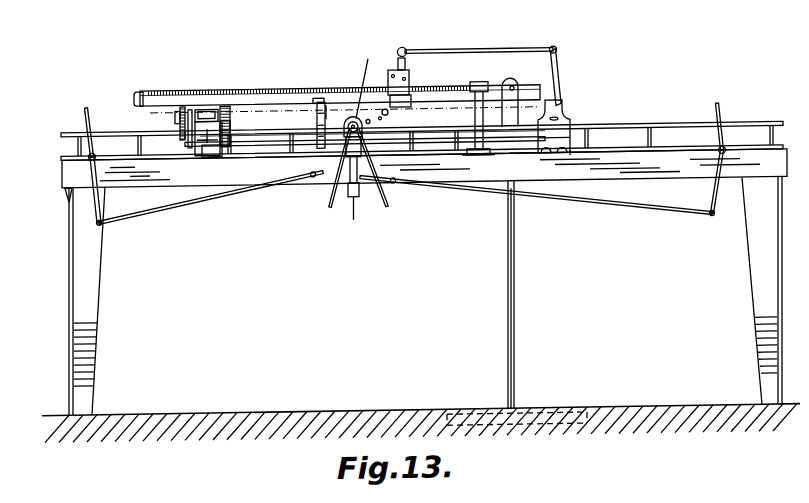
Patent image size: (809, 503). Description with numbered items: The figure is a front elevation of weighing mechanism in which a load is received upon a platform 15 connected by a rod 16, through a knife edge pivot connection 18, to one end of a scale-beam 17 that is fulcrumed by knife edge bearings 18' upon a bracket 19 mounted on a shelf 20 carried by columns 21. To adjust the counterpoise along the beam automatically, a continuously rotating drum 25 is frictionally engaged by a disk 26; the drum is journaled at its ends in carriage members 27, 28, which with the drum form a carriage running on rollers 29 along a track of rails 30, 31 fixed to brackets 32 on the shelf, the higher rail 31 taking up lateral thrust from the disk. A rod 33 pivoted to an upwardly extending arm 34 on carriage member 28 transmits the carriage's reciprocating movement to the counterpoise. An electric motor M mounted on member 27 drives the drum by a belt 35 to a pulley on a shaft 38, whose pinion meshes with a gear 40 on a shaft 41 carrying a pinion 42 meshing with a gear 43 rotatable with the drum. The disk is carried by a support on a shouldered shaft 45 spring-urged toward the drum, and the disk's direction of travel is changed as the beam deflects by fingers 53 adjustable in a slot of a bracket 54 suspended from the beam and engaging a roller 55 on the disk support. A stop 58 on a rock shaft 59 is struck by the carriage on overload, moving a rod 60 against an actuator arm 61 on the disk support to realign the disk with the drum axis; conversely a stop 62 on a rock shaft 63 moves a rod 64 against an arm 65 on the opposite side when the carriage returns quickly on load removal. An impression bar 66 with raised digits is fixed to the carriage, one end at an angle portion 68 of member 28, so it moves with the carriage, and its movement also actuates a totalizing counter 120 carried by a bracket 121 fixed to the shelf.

The platform 15 is at (546, 428).
The rod 16 is at (516, 300).
The scale-beam 17 is at (367, 77).
The knife edge pivot connection 18 is at (524, 95).
The knife edge bearings 18' is at (485, 105).
The bracket 19 is at (477, 158).
The shelf 20 is at (112, 176).
The columns 21 is at (96, 302).
The drum 25 is at (293, 132).
The disk 26 is at (369, 119).
The carriage member 27 is at (215, 155).
The carriage member 28 is at (570, 130).
The rollers 29 is at (185, 132).
The rail 30 is at (62, 157).
The rail 31 is at (63, 128).
The brackets 32 is at (61, 151).
The rod 33 is at (436, 49).
The arm 34 is at (558, 53).
The belt 35 is at (176, 118).
The shaft 38 is at (213, 147).
The gear 40 is at (181, 103).
The shaft 41 is at (204, 106).
The pinion 42 is at (229, 104).
The gear 43 is at (232, 128).
The shouldered shaft 45 is at (350, 121).
The fingers 53 is at (317, 147).
The bracket 54 is at (330, 104).
The roller 55 is at (318, 121).
The stop 58 is at (89, 113).
The rock shaft 59 is at (66, 190).
The rod 60 is at (152, 209).
The actuator arm 61 is at (330, 203).
The stop 62 is at (726, 116).
The rock shaft 63 is at (721, 159).
The rod 64 is at (706, 210).
The arm 65 is at (389, 198).
The bar 66 is at (292, 107).
The angle portion 68 is at (562, 112).
The counter 120 is at (410, 84).
The bracket 121 is at (398, 118).
The electric motor M is at (217, 86).